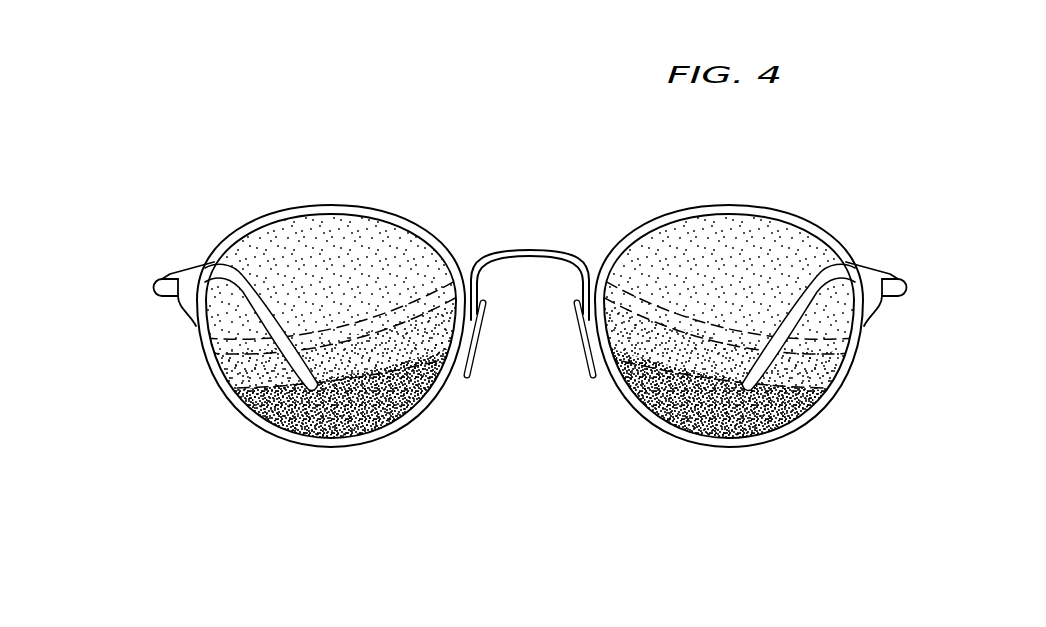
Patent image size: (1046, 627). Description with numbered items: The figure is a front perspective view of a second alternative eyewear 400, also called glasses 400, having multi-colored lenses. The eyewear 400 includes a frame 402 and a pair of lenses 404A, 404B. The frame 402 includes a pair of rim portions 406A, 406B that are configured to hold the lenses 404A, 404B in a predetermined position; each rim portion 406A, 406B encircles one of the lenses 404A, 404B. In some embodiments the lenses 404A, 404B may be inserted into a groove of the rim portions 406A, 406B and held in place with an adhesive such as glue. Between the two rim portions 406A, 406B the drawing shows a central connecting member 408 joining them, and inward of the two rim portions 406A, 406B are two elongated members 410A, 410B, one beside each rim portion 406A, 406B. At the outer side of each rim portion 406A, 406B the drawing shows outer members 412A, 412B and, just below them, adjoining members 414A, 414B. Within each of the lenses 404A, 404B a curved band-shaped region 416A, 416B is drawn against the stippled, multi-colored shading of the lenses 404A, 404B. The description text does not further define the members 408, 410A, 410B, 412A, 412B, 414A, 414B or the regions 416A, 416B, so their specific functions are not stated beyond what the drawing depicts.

The eyewear 400 is at (230, 160).
The frame 402 is at (363, 193).
The lens 404A is at (285, 412).
The lens 404B is at (775, 412).
The rim portion 406A is at (400, 428).
The rim portion 406B is at (660, 428).
The bridge 408 is at (531, 247).
The left nose pad 410A is at (487, 360).
The right nose pad 410B is at (573, 360).
The left hinge 412A is at (170, 270).
The right hinge 412B is at (890, 270).
The left temple end piece 414A is at (162, 297).
The right temple end piece 414B is at (898, 297).
The left reflective band 416A is at (270, 293).
The right reflective band 416B is at (785, 297).